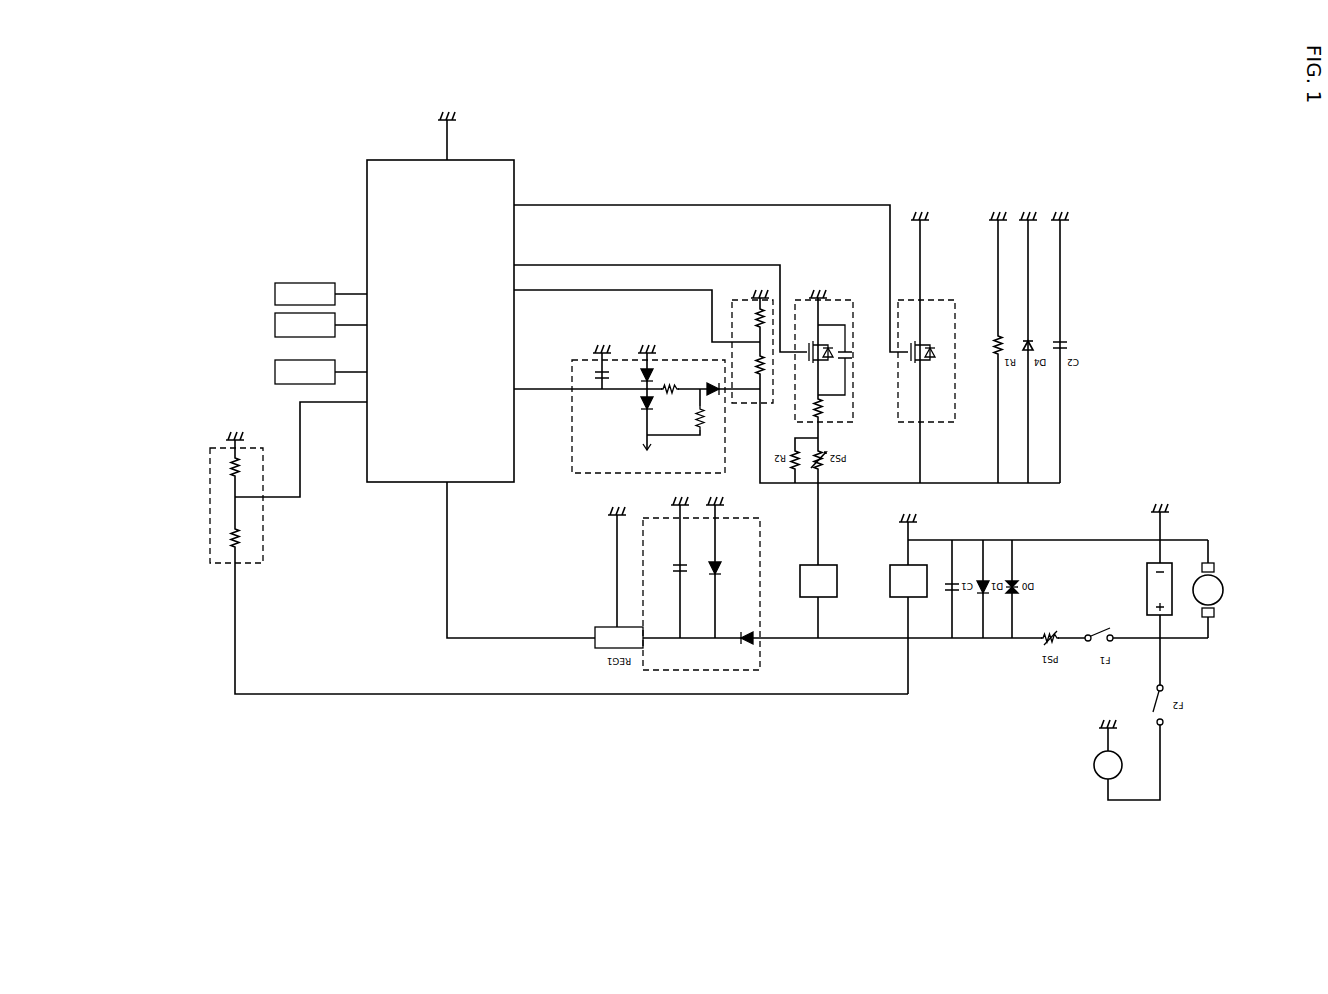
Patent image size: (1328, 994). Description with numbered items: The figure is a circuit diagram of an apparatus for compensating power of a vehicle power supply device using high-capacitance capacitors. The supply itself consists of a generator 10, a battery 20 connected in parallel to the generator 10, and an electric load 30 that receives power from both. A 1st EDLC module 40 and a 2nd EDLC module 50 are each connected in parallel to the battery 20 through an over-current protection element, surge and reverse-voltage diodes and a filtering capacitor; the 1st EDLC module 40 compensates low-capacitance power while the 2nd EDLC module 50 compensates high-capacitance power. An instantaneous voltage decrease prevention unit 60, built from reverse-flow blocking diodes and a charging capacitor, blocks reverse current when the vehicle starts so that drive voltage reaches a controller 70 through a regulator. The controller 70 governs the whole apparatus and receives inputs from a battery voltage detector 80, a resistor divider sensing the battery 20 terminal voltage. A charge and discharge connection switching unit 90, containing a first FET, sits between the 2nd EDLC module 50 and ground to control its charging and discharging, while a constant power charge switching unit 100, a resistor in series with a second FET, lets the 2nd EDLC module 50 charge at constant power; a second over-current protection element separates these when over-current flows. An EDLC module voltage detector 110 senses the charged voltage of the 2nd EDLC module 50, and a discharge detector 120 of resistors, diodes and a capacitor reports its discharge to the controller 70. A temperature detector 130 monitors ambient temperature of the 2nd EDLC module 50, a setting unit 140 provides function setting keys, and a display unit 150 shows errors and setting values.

The generator 10 is at (1213, 582).
The battery 20 is at (1147, 575).
The electric load 30 is at (1094, 766).
The 1st EDLC module 40 is at (893, 598).
The 2nd EDLC module 50 is at (805, 598).
The instantaneous voltage decrease prevention unit 60 is at (695, 672).
The controller 70 is at (395, 482).
The battery voltage detector 80 is at (250, 565).
The charge and discharge connection switching unit 90 is at (947, 300).
The constant power charge switching unit 100 is at (847, 300).
The EDLC module voltage detector 110 is at (745, 405).
The discharge detector 120 is at (570, 416).
The temperature detector 130 is at (273, 372).
The setting unit 140 is at (273, 325).
The display unit 150 is at (273, 294).